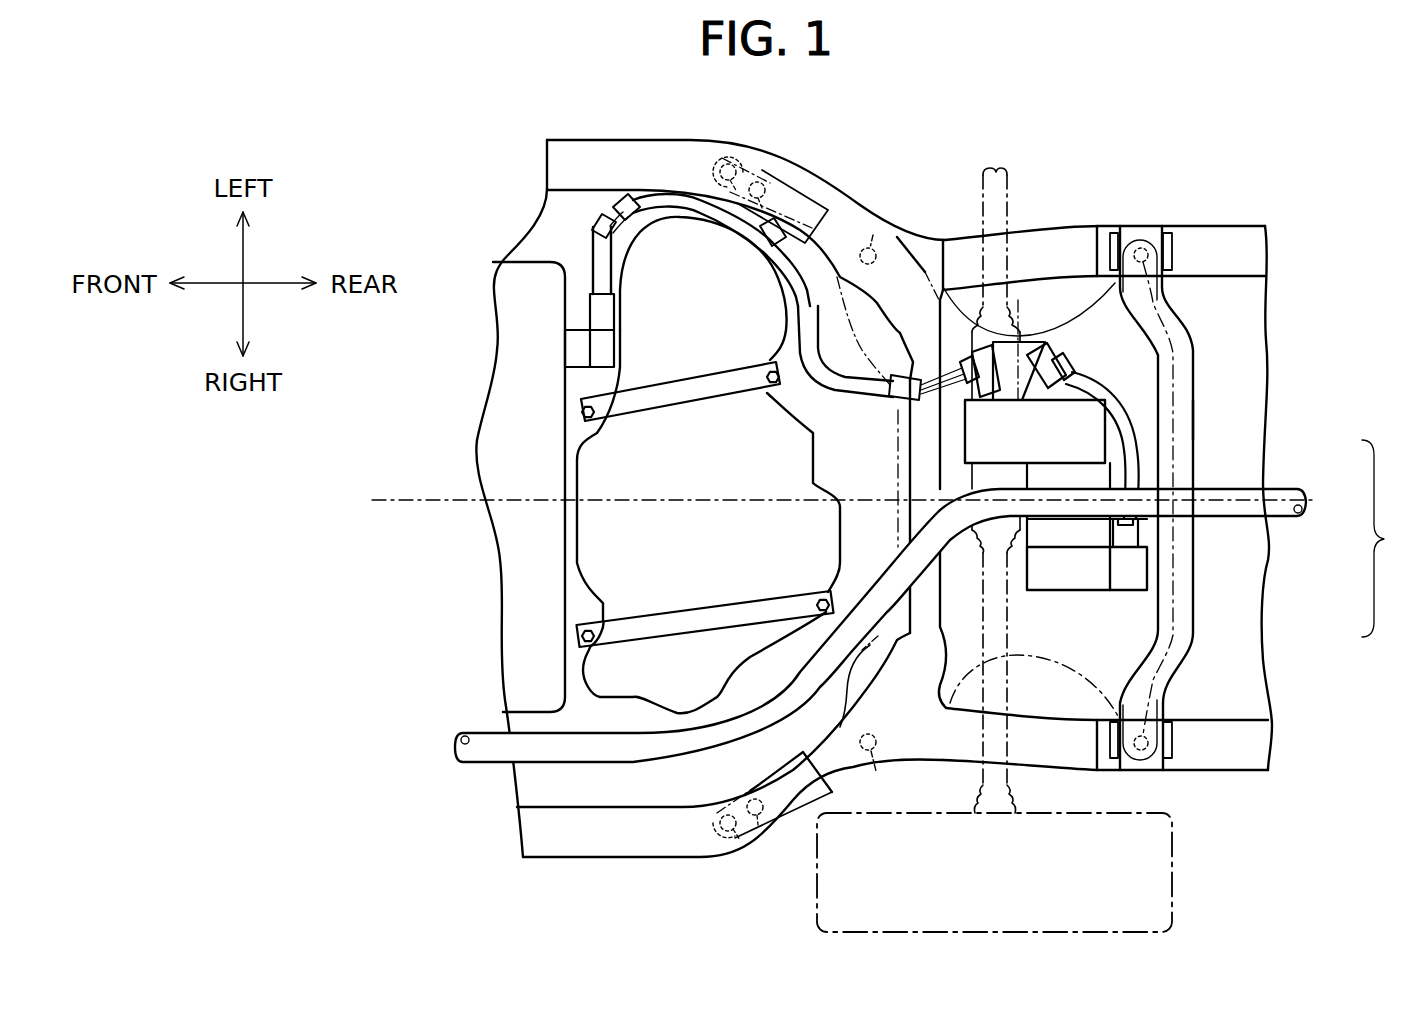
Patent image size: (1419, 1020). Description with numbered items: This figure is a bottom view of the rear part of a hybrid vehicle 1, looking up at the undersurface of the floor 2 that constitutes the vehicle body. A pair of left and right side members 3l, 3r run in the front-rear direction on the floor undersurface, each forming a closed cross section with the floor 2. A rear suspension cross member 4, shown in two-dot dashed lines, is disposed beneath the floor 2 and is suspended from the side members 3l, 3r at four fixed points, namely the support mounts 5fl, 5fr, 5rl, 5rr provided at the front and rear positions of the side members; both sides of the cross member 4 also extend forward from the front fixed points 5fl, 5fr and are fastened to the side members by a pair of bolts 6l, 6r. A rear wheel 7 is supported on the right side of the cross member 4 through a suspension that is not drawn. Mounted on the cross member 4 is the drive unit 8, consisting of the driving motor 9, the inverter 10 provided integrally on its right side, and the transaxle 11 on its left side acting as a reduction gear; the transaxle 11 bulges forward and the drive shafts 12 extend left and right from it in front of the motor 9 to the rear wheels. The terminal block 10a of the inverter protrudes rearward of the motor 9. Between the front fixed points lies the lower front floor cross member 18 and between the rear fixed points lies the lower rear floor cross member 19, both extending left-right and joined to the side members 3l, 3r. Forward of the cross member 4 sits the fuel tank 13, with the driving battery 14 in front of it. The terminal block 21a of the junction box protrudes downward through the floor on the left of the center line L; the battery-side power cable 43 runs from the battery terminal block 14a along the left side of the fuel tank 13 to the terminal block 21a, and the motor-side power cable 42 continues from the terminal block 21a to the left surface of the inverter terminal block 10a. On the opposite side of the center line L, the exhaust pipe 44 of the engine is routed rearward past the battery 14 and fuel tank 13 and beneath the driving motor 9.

The hybrid vehicle 1 is at (1124, 147).
The floor 2 is at (1250, 301).
The left side member 3l is at (1236, 250).
The right side member 3r is at (1238, 757).
The rear suspension cross member 4 is at (1175, 343).
The front left support mount 5fl is at (874, 234).
The front right support mount 5fr is at (875, 770).
The rear left support mount 5rl is at (1143, 245).
The rear right support mount 5rr is at (1143, 752).
The left bolt 6l is at (761, 149).
The right bolt 6r is at (756, 851).
The rear wheel 7 is at (1172, 878).
The drive unit 8 is at (1382, 538).
The driving motor 9 is at (1093, 532).
The inverter 10 is at (1085, 585).
The terminal block of the inverter 10a is at (1133, 570).
The transaxle 11 is at (1077, 440).
The drive shaft 12 is at (1009, 190).
The fuel tank 13 is at (597, 482).
The driving battery 14 is at (510, 597).
The terminal block of the driving battery 14a is at (575, 348).
The lower front floor cross member 18 is at (920, 457).
The lower rear floor cross member 19 is at (1185, 420).
The terminal block of the junction box 21a is at (1040, 350).
The motor-side power cable 42 is at (1147, 400).
The battery-side power cable 43 is at (792, 268).
The exhaust pipe 44 is at (584, 763).
The center line L is at (401, 494).